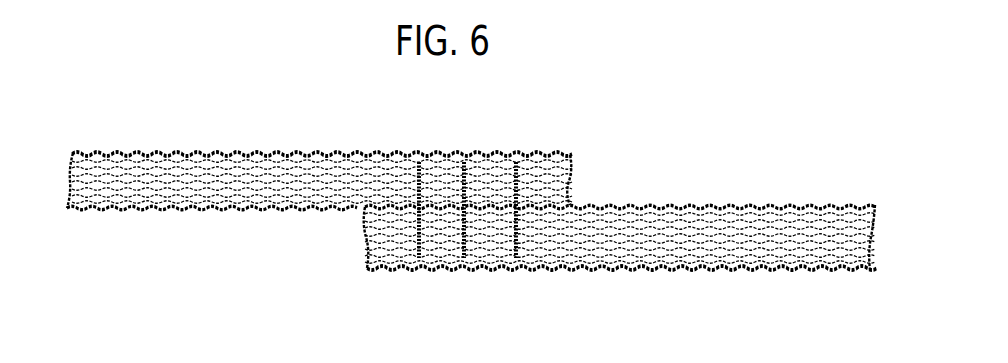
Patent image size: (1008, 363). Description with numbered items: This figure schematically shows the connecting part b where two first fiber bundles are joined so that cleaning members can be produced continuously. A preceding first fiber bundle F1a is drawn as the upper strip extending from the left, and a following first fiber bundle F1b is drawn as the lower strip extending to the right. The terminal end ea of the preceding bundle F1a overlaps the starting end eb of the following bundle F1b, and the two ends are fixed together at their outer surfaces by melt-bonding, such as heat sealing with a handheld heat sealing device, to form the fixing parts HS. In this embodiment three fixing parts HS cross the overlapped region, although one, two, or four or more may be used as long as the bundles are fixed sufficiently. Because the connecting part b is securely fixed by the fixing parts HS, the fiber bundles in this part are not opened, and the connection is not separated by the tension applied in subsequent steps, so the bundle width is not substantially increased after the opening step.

The preceding first fiber bundle F1a is at (220, 172).
The following first fiber bundle F1b is at (693, 229).
The fixing parts HS is at (516, 162).
The terminal end ea is at (549, 168).
The starting end eb is at (365, 257).
The connecting part b is at (575, 284).